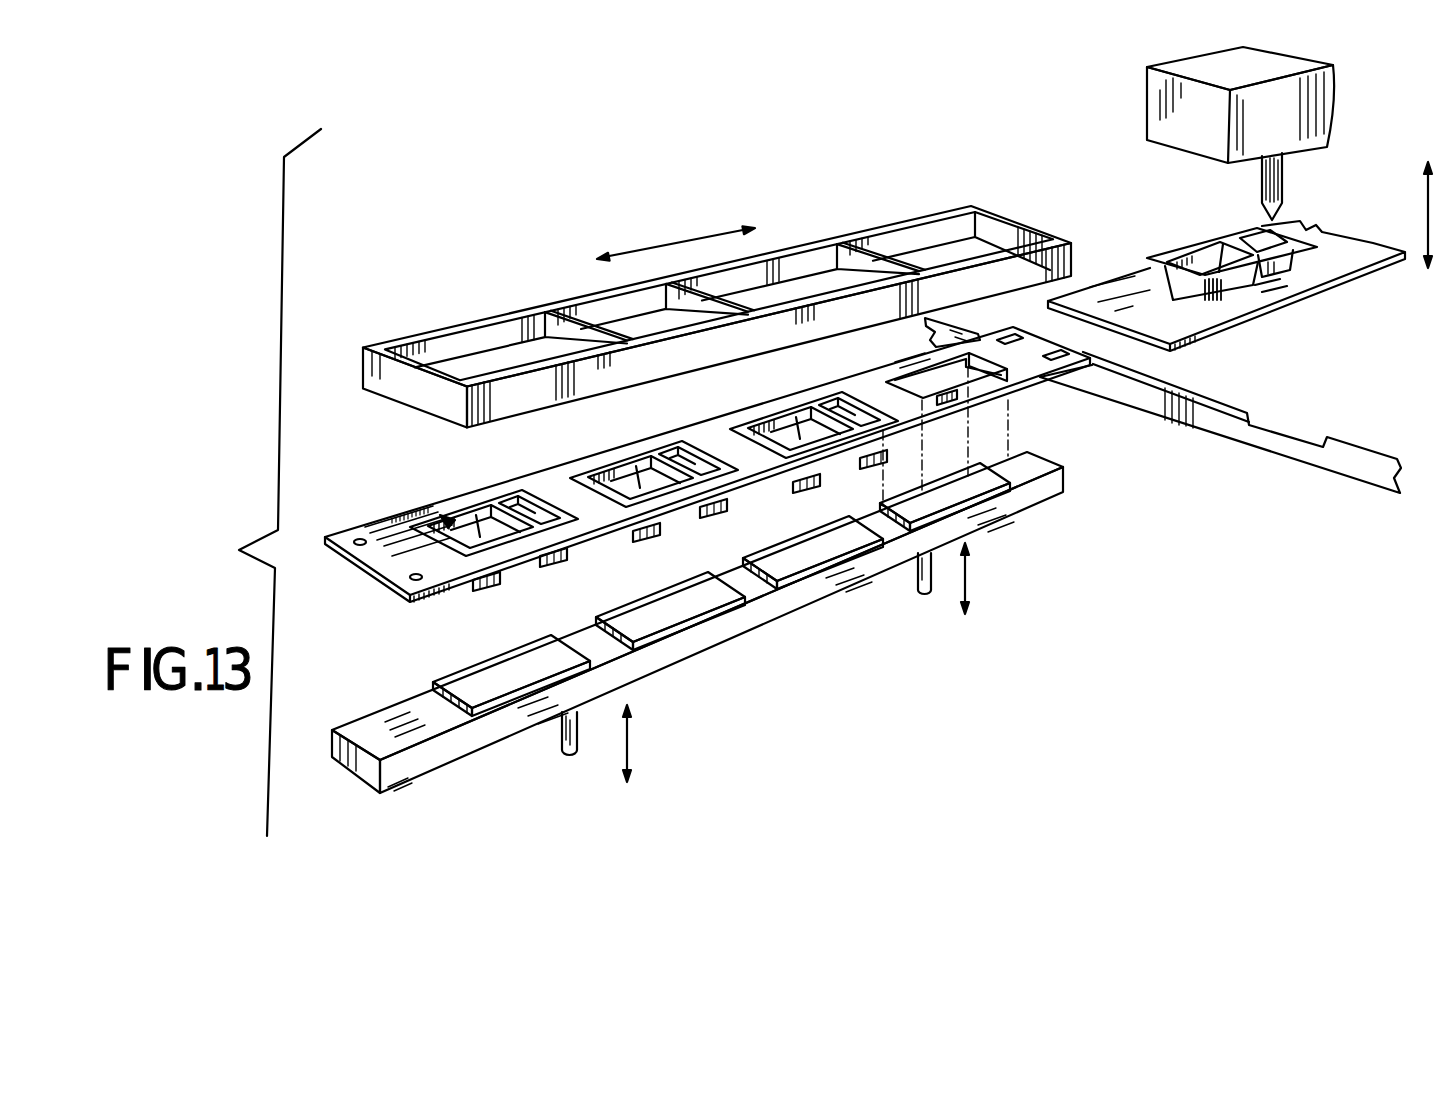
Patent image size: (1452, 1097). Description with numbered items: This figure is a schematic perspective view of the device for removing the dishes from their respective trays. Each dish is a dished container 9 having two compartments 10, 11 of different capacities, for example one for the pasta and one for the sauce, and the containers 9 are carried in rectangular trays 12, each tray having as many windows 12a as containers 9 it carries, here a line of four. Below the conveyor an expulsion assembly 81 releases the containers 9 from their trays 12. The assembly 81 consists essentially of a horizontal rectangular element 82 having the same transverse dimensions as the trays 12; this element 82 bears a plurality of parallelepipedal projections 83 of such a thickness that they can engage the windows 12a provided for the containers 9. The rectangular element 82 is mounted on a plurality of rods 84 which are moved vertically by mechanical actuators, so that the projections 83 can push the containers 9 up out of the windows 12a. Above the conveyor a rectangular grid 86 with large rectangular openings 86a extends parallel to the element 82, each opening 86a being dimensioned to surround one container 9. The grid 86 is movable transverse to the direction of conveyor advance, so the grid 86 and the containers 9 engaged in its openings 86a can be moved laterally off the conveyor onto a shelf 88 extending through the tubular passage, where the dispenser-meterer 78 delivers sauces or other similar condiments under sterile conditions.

The dispenser-meterer 78 is at (1330, 108).
The expulsion assembly 81 is at (239, 550).
The horizontal rectangular element 82 is at (695, 638).
The parallelepipedal projections 83 is at (498, 678).
The rods 84 is at (560, 738).
The rectangular grid 86 is at (681, 276).
The rectangular openings 86a is at (452, 332).
The shelf 88 is at (1178, 318).
The dished container 9 is at (858, 409).
The compartment 10 is at (462, 527).
The compartment 11 is at (513, 508).
The rectangular tray 12 is at (707, 460).
The windows 12a is at (962, 378).